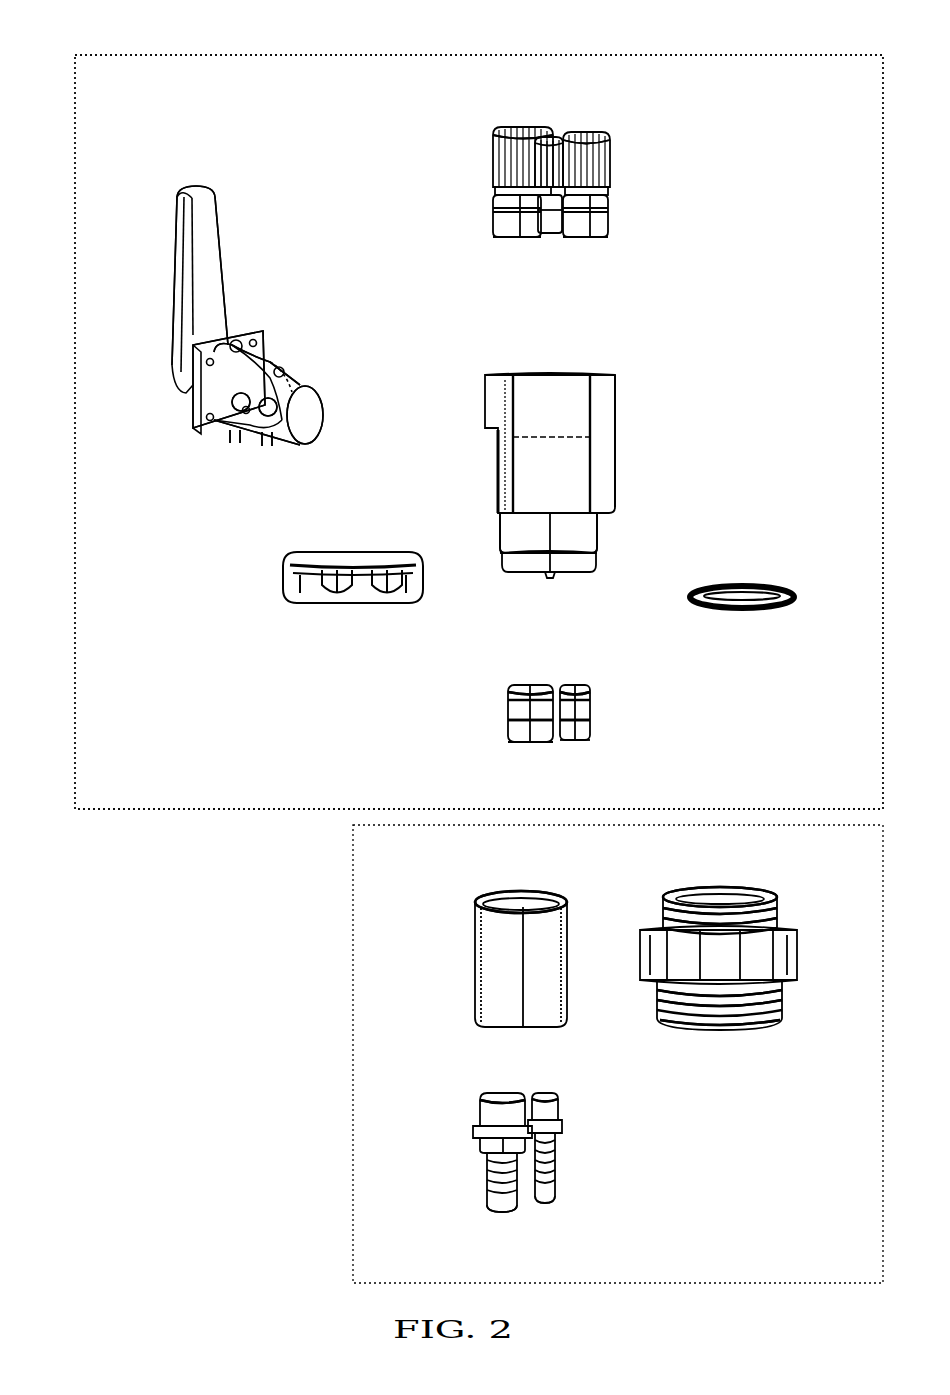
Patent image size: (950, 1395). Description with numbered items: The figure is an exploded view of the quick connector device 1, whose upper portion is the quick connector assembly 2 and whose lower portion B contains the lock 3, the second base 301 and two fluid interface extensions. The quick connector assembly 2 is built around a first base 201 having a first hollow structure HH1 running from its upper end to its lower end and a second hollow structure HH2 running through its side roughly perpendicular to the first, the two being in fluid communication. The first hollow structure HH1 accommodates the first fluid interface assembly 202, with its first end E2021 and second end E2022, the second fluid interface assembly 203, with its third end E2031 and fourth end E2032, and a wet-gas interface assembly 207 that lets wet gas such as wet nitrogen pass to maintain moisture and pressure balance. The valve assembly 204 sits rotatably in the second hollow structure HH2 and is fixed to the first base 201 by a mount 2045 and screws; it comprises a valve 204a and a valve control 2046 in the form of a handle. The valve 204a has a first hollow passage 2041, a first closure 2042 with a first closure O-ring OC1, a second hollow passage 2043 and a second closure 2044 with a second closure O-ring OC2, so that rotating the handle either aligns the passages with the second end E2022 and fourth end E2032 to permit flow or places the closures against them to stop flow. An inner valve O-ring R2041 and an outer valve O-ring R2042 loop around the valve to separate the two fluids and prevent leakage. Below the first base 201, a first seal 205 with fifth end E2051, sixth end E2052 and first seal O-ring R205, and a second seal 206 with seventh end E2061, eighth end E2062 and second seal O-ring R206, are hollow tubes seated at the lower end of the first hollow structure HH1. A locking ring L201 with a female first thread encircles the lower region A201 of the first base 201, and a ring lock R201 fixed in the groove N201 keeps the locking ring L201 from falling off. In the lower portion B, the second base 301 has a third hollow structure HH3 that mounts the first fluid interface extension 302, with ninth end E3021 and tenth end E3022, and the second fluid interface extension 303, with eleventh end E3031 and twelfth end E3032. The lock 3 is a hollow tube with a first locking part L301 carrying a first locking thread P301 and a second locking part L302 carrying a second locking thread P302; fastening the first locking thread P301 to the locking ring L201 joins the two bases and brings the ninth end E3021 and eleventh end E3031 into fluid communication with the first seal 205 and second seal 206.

The quick connector device 1 is at (42, 45).
The quick connector assembly 2 is at (112, 127).
The lower portion B is at (389, 873).
The first base 201 is at (600, 410).
The first hollow structure HH1 is at (545, 376).
The second hollow structure HH2 is at (618, 470).
The lower region A201 is at (502, 522).
The groove N201 is at (598, 545).
The ring lock R201 is at (750, 585).
The locking ring L201 is at (345, 605).
The first fluid interface assembly 202 is at (493, 150).
The first end E2021 is at (540, 110).
The second end E2022 is at (520, 238).
The second fluid interface assembly 203 is at (610, 190).
The third end E2031 is at (600, 136).
The fourth end E2032 is at (590, 238).
The wet-gas interface assembly 207 is at (550, 236).
The valve assembly 204 is at (185, 408).
The valve 204a is at (212, 973).
The first hollow passage 2041 is at (255, 370).
The first closure 2042 is at (236, 418).
The second hollow passage 2043 is at (292, 392).
The second closure 2044 is at (267, 433).
The mount 2045 is at (196, 378).
The valve control 2046 is at (215, 242).
The inner valve O-ring R2041 is at (284, 371).
The outer valve O-ring R2042 is at (238, 340).
The first closure O-ring OC1 is at (243, 413).
The second closure O-ring OC2 is at (268, 412).
The first seal 205 is at (508, 702).
The fifth end E2051 is at (542, 660).
The sixth end E2052 is at (520, 744).
The first seal O-ring R205 is at (508, 720).
The second seal 206 is at (590, 697).
The seventh end E2061 is at (580, 686).
The eighth end E2062 is at (575, 742).
The second seal O-ring R206 is at (590, 720).
The lock 3 is at (797, 940).
The second base 301 is at (475, 985).
The third hollow structure HH3 is at (560, 898).
The first locking part L301 is at (695, 890).
The second locking part L302 is at (695, 1022).
The first locking thread P301 is at (780, 905).
The second locking thread P302 is at (775, 1005).
The first fluid interface extension 302 is at (478, 1150).
The ninth end E3021 is at (525, 1070).
The tenth end E3022 is at (490, 1212).
The second fluid interface extension 303 is at (560, 1135).
The eleventh end E3031 is at (547, 1088).
The twelfth end E3032 is at (540, 1205).